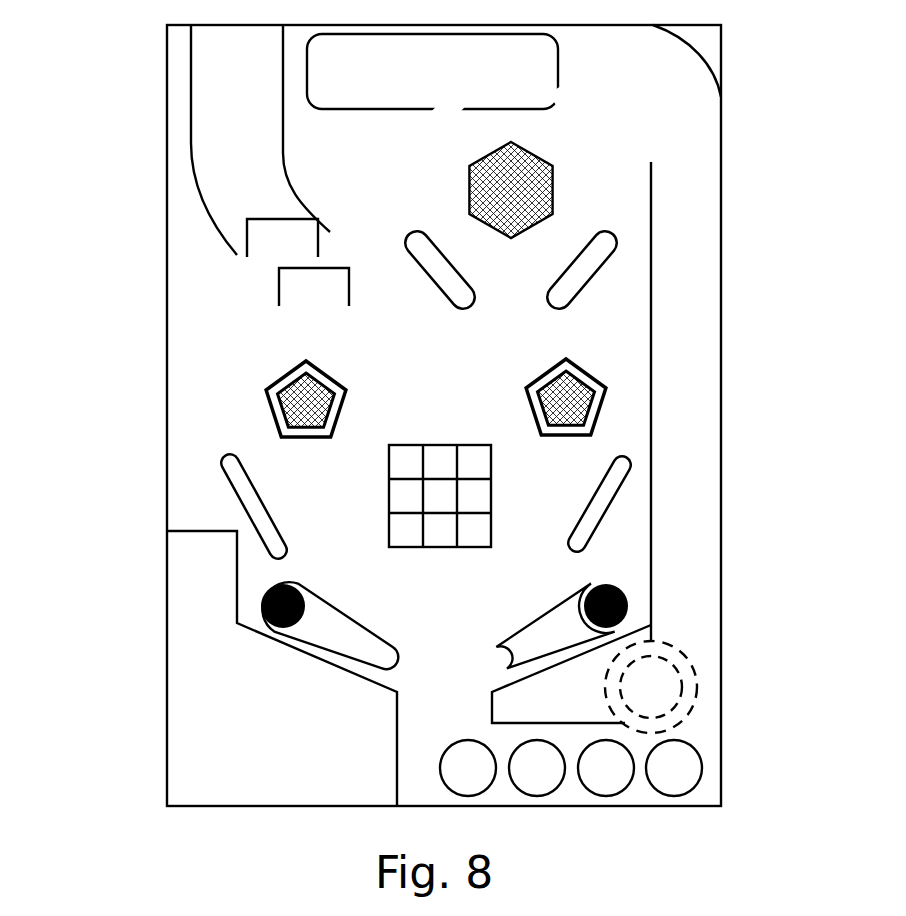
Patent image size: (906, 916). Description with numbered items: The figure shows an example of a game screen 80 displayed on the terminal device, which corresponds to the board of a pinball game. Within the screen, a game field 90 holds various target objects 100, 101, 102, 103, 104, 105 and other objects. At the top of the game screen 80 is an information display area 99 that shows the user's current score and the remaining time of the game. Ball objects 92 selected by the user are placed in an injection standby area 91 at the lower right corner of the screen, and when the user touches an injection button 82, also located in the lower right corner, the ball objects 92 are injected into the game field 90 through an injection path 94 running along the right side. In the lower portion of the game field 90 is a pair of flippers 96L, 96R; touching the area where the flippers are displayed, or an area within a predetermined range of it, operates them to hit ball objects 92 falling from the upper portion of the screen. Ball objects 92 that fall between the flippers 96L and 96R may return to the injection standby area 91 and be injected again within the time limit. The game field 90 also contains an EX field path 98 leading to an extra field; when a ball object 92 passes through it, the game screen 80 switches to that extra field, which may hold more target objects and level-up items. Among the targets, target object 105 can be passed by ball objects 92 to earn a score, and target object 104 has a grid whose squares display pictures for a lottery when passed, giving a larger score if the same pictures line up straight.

The game screen 80 is at (167, 70).
The game field 90 is at (237, 357).
The EX field path 98 is at (237, 153).
The target object 105 is at (279, 287).
The information display area 99 is at (558, 73).
The injection path 94 is at (683, 277).
The target object 101 is at (600, 107).
The target object 100 is at (553, 190).
The target object 102 is at (605, 388).
The target object 104 is at (492, 472).
The target object 103 is at (230, 493).
The injection standby area 91 is at (417, 760).
The left flipper 96L is at (257, 606).
The right flipper 96R is at (627, 600).
The injection button 82 is at (697, 690).
The ball objects 92 is at (702, 770).